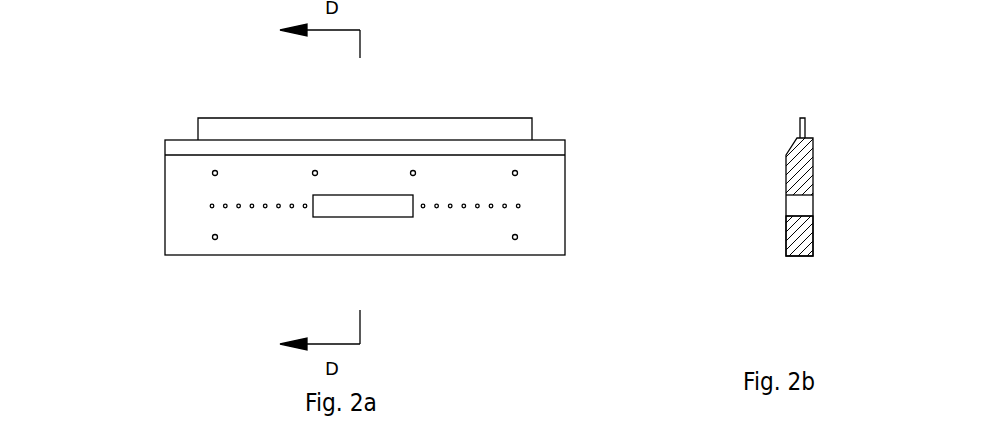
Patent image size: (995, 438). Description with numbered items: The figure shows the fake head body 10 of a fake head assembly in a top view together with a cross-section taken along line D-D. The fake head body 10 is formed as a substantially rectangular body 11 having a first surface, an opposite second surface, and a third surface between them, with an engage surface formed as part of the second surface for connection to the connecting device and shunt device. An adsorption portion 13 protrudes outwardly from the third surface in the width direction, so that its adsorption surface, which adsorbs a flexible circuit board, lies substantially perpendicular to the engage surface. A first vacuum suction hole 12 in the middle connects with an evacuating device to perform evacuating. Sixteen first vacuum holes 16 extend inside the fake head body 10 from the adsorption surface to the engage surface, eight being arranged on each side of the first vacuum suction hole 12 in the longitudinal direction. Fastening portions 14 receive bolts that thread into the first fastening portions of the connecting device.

In FIG. 2A, the fake head body 10 is at (111, 182).
In FIG. 2A, the rectangular body 11 is at (180, 192).
In FIG. 2B, the rectangular body 11 is at (803, 172).
In FIG. 2A, the first vacuum suction hole 12 is at (357, 205).
In FIG. 2B, the first vacuum suction hole 12 is at (795, 213).
In FIG. 2A, the adsorption portion 13 is at (372, 128).
In FIG. 2B, the adsorption portion 13 is at (800, 128).
In FIG. 2A, the fastening portion 14 is at (212, 238).
In FIG. 2A, the first vacuum holes 16 is at (520, 206).